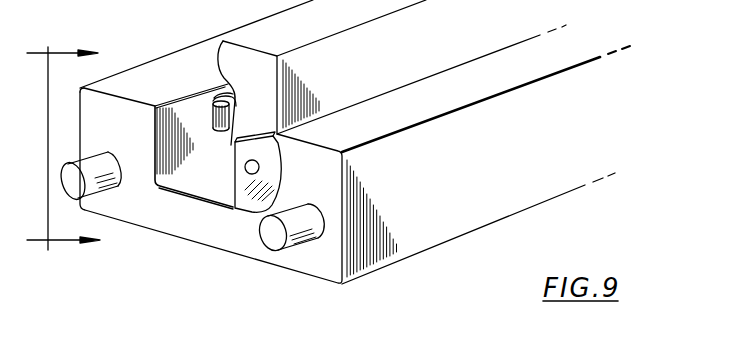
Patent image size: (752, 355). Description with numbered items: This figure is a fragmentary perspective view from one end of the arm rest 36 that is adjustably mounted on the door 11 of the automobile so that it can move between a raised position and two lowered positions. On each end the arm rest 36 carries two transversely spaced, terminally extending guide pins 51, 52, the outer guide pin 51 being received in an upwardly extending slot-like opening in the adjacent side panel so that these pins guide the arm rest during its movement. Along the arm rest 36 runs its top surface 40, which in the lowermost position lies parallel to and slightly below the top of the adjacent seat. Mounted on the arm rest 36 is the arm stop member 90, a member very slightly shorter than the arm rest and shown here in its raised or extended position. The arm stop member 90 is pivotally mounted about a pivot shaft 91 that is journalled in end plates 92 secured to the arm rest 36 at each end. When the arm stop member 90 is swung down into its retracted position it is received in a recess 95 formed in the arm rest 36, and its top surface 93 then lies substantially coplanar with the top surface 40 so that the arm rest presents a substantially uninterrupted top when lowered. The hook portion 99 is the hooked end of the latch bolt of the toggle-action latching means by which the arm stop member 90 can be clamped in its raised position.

The door 11 is at (67, 149).
The arm rest 36 is at (440, 252).
The top surface 40 is at (462, 98).
The outer guide pin 51 is at (110, 176).
The guide pin 52 is at (298, 240).
The arm stop member 90 is at (450, 37).
The pivot shaft 91 is at (256, 170).
The end plate 92 is at (234, 190).
The top surface 93 is at (399, 66).
The recess 95 is at (207, 170).
The hook portion 99 is at (230, 120).